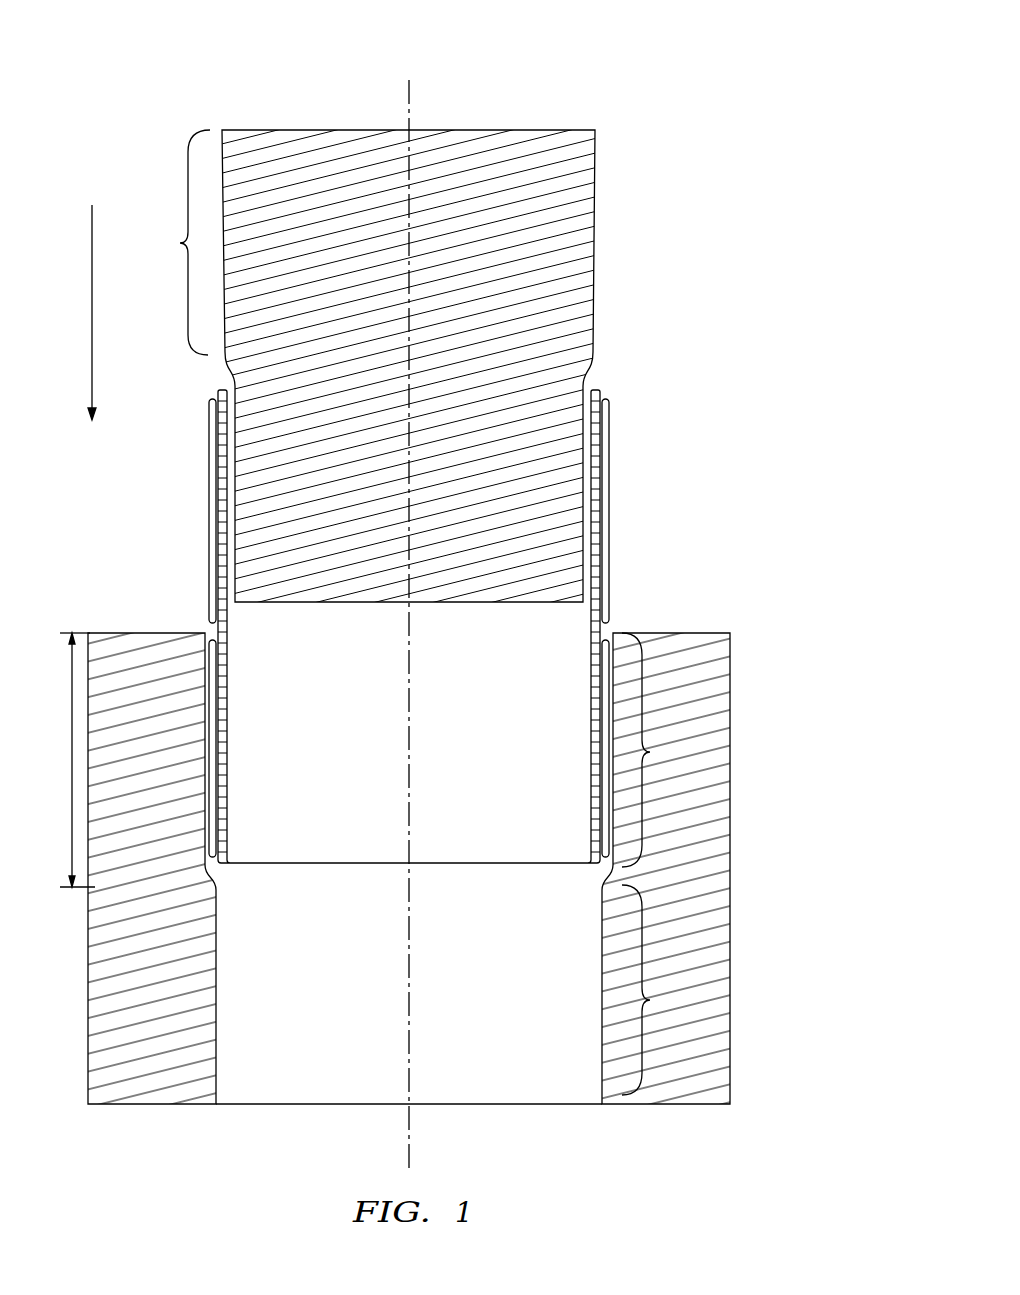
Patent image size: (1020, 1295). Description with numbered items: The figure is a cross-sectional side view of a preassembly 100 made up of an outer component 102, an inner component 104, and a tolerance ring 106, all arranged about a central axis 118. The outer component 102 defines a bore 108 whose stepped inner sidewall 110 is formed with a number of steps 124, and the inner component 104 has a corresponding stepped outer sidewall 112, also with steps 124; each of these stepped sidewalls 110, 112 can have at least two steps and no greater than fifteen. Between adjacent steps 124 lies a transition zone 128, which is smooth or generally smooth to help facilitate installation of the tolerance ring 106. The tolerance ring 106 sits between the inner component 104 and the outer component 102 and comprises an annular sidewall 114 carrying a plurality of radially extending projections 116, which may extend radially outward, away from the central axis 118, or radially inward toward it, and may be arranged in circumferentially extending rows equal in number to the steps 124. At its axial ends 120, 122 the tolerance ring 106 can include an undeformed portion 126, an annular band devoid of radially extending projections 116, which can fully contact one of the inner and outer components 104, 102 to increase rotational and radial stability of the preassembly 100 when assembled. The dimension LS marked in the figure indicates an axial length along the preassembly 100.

The preassembly 100 is at (640, 85).
The outer component 102 is at (733, 737).
The inner component 104 is at (596, 240).
The tolerance ring 106 is at (600, 389).
The bore 108 is at (516, 1007).
The stepped inner sidewall 110 is at (217, 966).
The stepped outer sidewall 112 is at (226, 368).
The annular sidewall 114 is at (211, 400).
The radially extending projections 116 is at (218, 545).
The central axis 118 is at (411, 86).
The axial end 120 is at (228, 864).
The axial end 122 is at (587, 390).
The steps 124 is at (418, 612).
The undeformed portion 126 is at (213, 851).
The transition zone 128 is at (207, 884).
The sleeve length LS is at (73, 760).